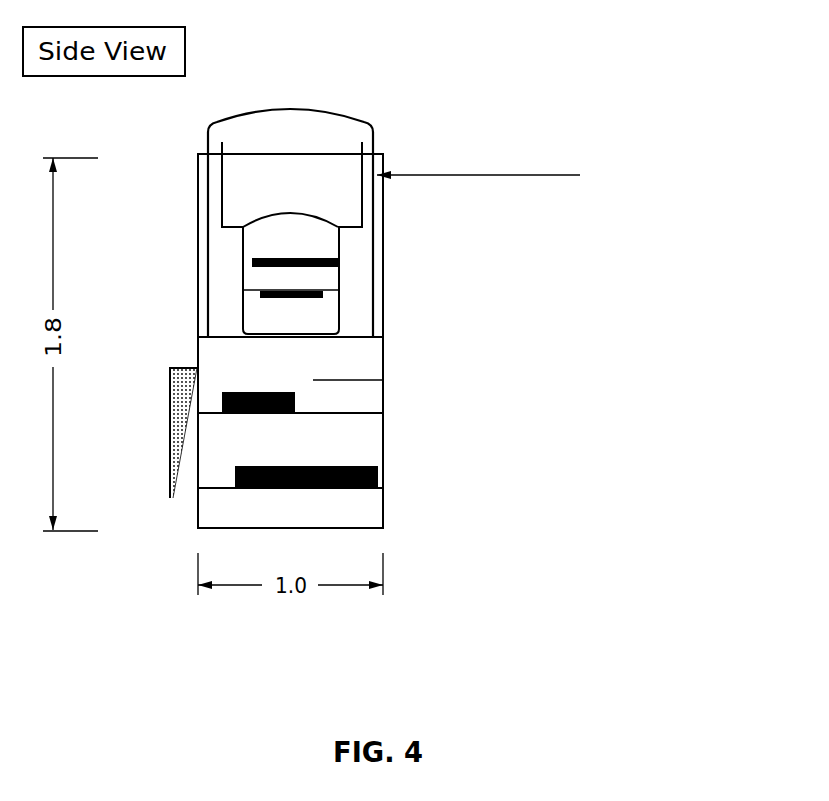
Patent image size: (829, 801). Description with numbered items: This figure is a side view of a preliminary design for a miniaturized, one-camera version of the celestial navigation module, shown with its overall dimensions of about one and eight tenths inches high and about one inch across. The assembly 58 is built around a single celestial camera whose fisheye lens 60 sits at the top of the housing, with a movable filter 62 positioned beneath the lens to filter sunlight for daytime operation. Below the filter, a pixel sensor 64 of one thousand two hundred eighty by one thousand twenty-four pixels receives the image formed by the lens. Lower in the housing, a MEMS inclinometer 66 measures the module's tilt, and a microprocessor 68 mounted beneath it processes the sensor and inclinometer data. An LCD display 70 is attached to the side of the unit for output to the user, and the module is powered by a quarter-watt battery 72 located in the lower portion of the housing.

The inclinometer device (side view) 58 is at (368, 77).
The fisheye lens 60 is at (382, 125).
The movable filter 62 is at (386, 268).
The pixel sensor 64 is at (325, 304).
The MEMS inclinometer 66 is at (387, 394).
The microprocessor 68 is at (387, 478).
The LCD display 70 is at (140, 433).
The battery 72 is at (237, 428).